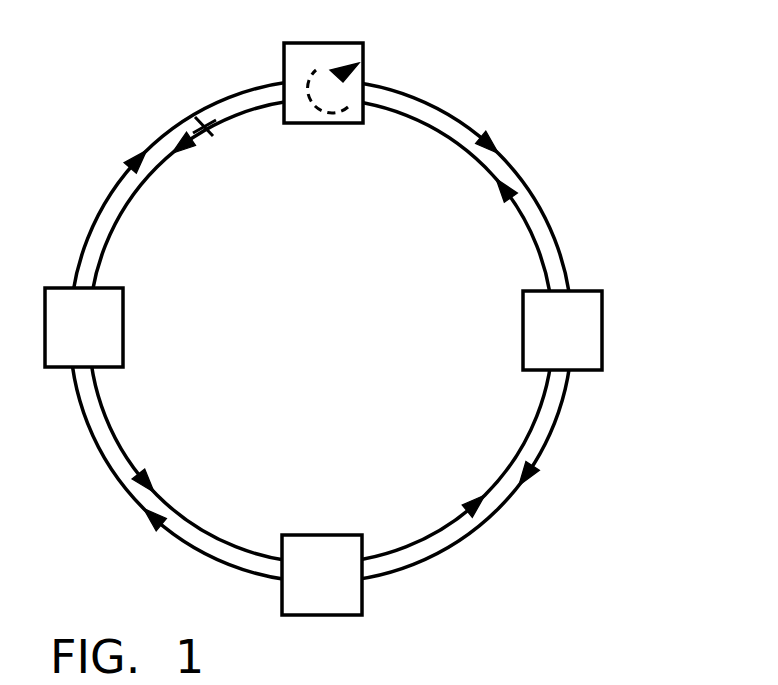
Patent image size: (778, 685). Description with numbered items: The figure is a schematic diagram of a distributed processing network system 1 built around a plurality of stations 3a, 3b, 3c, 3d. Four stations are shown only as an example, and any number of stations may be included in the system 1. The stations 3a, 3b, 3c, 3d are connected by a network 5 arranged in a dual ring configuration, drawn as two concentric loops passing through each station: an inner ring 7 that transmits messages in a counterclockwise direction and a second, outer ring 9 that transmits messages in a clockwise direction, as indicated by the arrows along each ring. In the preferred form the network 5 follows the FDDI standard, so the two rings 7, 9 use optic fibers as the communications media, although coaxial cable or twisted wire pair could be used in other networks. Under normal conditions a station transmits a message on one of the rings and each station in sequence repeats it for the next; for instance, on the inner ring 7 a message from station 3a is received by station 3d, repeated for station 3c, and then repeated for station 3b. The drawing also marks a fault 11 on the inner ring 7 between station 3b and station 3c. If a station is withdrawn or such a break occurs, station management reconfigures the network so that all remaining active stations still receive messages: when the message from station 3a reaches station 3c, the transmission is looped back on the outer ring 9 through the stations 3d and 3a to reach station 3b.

The distributed processing network system 1 is at (361, 313).
The station 3a is at (310, 538).
The station 3b is at (110, 348).
The station 3c is at (337, 46).
The station 3d is at (590, 360).
The network 5 is at (353, 331).
The ring 7 is at (452, 138).
The ring 9 is at (452, 108).
The fault 11 is at (209, 138).